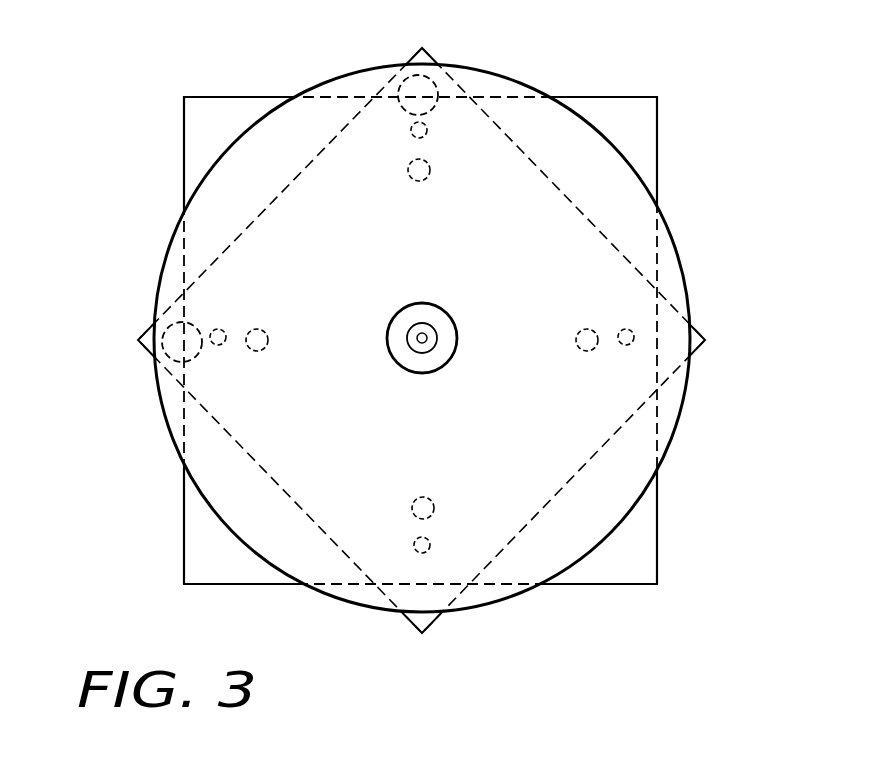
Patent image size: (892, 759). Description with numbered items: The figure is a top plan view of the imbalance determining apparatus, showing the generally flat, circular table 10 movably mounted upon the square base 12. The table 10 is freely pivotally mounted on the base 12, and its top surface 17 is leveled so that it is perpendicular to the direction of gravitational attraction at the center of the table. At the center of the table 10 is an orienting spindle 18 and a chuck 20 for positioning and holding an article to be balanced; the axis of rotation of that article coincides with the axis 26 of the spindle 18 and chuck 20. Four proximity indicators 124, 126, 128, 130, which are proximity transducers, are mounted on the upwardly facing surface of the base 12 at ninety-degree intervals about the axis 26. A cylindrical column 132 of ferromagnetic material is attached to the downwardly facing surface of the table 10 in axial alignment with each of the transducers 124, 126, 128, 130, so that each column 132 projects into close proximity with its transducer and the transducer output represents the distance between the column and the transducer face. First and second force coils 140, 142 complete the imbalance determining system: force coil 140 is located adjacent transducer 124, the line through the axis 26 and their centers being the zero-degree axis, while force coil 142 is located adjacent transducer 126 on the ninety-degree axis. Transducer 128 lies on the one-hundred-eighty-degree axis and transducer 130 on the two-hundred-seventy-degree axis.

The table 10 is at (525, 84).
The base 12 is at (641, 131).
The top surface 17 is at (493, 249).
The orienting spindle 18 is at (466, 366).
The chuck 20 is at (405, 352).
The axis 26 is at (420, 333).
The proximity indicator 124 is at (225, 346).
The proximity indicator 126 is at (410, 128).
The proximity indicator 128 is at (632, 332).
The proximity indicator 130 is at (430, 552).
The cylindrical column 132 is at (422, 332).
The first force coil 140 is at (165, 323).
The second force coil 142 is at (402, 85).